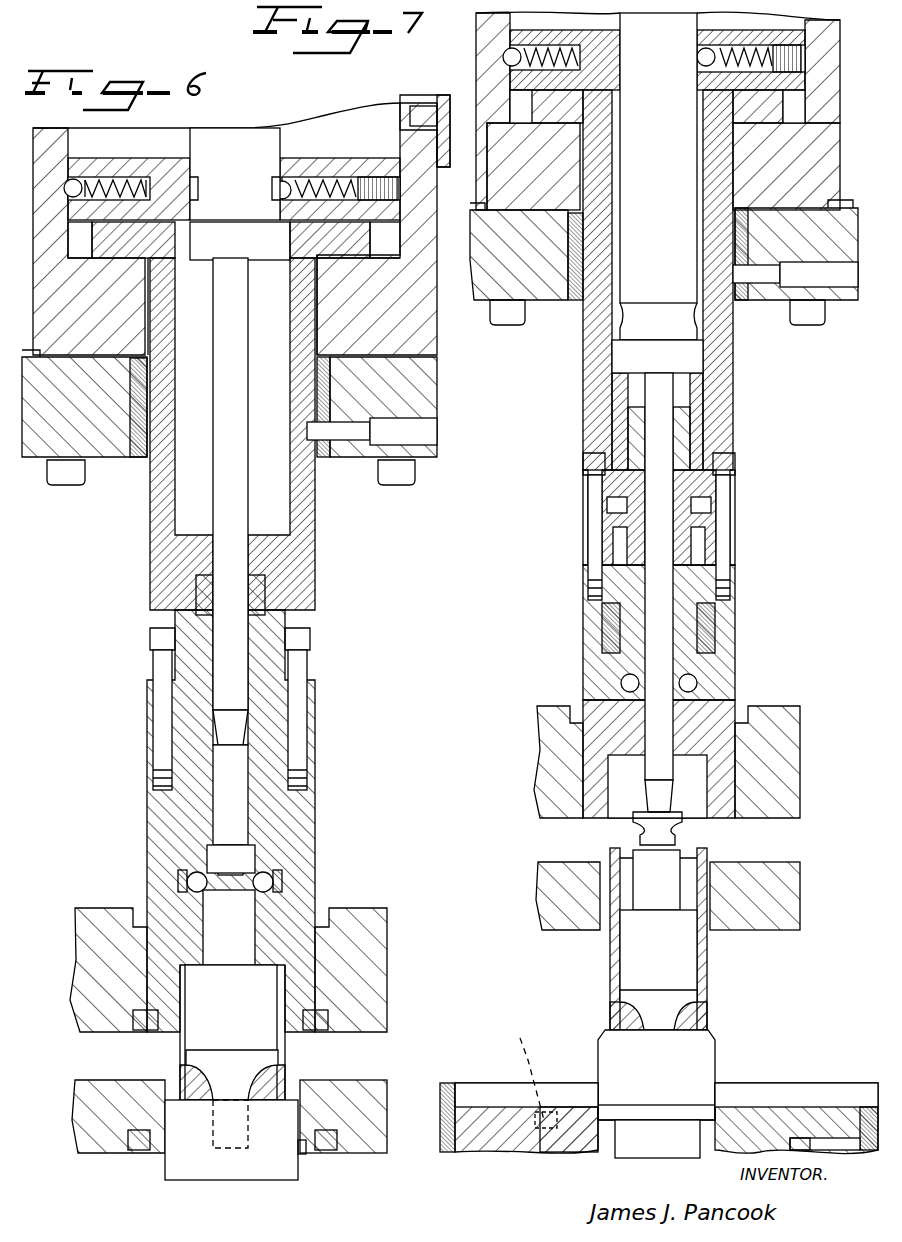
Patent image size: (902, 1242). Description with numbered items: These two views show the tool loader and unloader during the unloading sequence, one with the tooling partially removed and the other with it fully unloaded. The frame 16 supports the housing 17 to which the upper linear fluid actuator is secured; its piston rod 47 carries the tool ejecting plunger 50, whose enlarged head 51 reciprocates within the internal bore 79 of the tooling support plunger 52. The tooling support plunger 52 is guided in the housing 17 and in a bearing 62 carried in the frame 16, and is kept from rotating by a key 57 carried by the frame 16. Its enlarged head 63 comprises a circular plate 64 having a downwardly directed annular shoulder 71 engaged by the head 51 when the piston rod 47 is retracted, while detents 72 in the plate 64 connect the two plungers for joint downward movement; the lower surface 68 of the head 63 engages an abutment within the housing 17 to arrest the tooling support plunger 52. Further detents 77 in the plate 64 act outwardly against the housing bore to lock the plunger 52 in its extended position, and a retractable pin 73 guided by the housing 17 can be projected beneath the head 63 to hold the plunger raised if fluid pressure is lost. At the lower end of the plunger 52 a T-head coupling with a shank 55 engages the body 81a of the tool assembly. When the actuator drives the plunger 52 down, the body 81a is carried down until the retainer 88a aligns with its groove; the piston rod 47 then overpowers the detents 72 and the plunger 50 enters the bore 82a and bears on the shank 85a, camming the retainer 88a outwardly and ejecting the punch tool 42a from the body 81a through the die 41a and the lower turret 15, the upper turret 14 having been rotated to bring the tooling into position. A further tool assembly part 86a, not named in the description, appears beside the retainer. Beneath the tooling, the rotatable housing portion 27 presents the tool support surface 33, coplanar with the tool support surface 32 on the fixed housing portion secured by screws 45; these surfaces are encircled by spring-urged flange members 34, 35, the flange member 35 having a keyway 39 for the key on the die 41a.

In FIG. 6, the upper turret 14 is at (103, 935).
In FIG. 7, the upper turret 14 is at (555, 768).
In FIG. 6, the lower turret 15 is at (80, 1115).
In FIG. 7, the lower turret 15 is at (560, 930).
In FIG. 6, the frame 16 is at (437, 395).
In FIG. 7, the frame 16 is at (840, 230).
In FIG. 6, the housing 17 is at (418, 330).
In FIG. 7, the housing 17 is at (820, 153).
In FIG. 7, the selectively rotatable portion of the housing 27 is at (664, 1148).
In FIG. 7, the tool support surface 32 is at (488, 1107).
In FIG. 7, the tool support surface 33 is at (635, 1105).
In FIG. 7, the flange member 34 is at (446, 1152).
In FIG. 7, the flange member 35 is at (595, 1140).
In FIG. 7, the keyway 39 is at (722, 1085).
In FIG. 6, the die 41a is at (190, 1168).
In FIG. 7, the die 41a is at (598, 1052).
In FIG. 6, the punch tool 42a is at (288, 1062).
In FIG. 7, the punch tool 42a is at (598, 1015).
In FIG. 7, the screw 45 is at (531, 1072).
In FIG. 6, the piston rod 47 is at (228, 145).
In FIG. 7, the piston rod 47 is at (664, 138).
In FIG. 6, the tool ejecting plunger 50 is at (233, 353).
In FIG. 7, the tool ejecting plunger 50 is at (660, 580).
In FIG. 6, the enlarged head 51 is at (252, 255).
In FIG. 7, the enlarged head 51 is at (666, 370).
In FIG. 6, the tooling support plunger 52 is at (165, 370).
In FIG. 7, the tooling support plunger 52 is at (595, 400).
In FIG. 6, the shank 55 is at (258, 598).
In FIG. 7, the shank 55 is at (682, 483).
In FIG. 6, the key 57 is at (348, 432).
In FIG. 7, the key 57 is at (760, 277).
In FIG. 6, the bearing 62 is at (138, 450).
In FIG. 7, the bearing 62 is at (573, 300).
In FIG. 6, the enlarged head 63 is at (378, 224).
In FIG. 6, the circular plate 64 is at (178, 160).
In FIG. 7, the circular plate 64 is at (600, 40).
In FIG. 6, the lower surface 68 is at (318, 278).
In FIG. 6, the annular shoulder 71 is at (183, 262).
In FIG. 6, the detent means 72 is at (284, 180).
In FIG. 7, the detent means 72 is at (696, 50).
In FIG. 6, the retractable pin 73 is at (425, 110).
In FIG. 6, the detents 77 is at (75, 178).
In FIG. 7, the detents 77 is at (503, 57).
In FIG. 7, the internal bore 79 is at (612, 257).
In FIG. 7, the body of the tool assembly 81a is at (650, 620).
In FIG. 6, the bore 82a is at (222, 790).
In FIG. 6, the shank 85a is at (238, 937).
In FIG. 7, the shank 85a is at (664, 887).
In FIG. 6, the ball bearing 86a is at (233, 878).
In FIG. 6, the retainer 88a is at (223, 855).